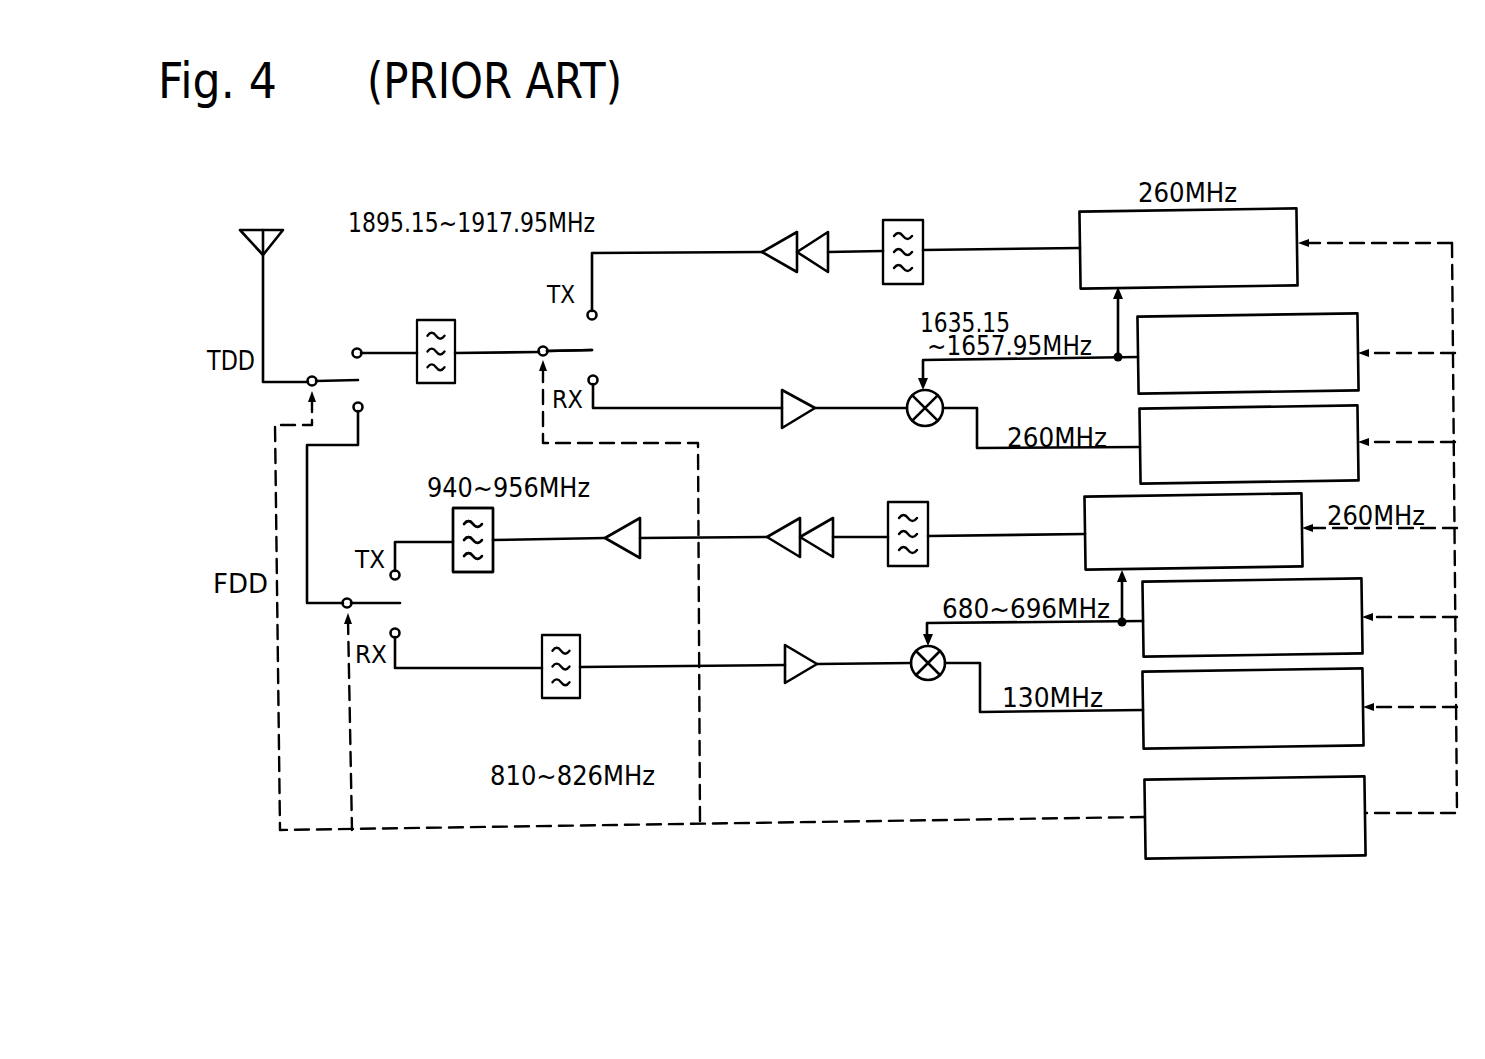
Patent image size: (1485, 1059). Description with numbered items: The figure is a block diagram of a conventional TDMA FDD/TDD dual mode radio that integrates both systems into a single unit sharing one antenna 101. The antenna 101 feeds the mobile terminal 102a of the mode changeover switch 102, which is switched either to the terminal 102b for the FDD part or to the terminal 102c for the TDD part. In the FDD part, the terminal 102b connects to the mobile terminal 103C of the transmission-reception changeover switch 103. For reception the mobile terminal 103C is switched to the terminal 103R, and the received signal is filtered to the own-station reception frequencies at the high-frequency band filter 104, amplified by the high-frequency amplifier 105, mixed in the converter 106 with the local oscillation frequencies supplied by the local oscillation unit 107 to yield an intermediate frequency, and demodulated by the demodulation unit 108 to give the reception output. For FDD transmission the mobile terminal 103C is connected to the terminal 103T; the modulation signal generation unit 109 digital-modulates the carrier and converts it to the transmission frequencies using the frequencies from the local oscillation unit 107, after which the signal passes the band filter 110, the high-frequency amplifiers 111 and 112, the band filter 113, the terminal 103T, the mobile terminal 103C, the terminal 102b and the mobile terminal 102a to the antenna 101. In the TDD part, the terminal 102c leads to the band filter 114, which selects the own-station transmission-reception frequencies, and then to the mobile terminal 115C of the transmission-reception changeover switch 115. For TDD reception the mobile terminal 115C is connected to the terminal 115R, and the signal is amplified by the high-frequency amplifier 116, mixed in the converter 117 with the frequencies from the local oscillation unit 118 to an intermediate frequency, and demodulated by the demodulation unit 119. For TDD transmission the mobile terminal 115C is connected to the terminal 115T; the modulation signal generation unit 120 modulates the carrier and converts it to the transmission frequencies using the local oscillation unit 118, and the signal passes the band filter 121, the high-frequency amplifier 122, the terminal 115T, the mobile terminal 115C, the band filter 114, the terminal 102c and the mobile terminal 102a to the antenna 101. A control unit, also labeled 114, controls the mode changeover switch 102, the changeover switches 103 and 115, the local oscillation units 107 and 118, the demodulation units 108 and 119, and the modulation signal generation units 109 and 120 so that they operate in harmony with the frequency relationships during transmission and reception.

The antenna 101 is at (255, 228).
The mode changeover switch 102 is at (307, 385).
The mobile terminal 102a is at (259, 429).
The terminal 102b is at (370, 412).
The terminal 102c is at (355, 348).
The transmission-reception changeover switch 103 is at (343, 612).
The mobile terminal 103C is at (278, 660).
The terminal 103T is at (400, 578).
The terminal 103R is at (400, 633).
The high-frequency band filter 104 is at (555, 700).
The high-frequency amplifier 105 is at (800, 680).
The converter 106 is at (927, 685).
The local oscillation unit 107 is at (1363, 643).
The demodulation unit 108 is at (1365, 730).
The modulation signal generation unit 109 is at (1303, 550).
The band filter 110 is at (902, 502).
The high-frequency amplifier 111 is at (785, 518).
The high-frequency amplifier 112 is at (625, 525).
The band filter 113 is at (493, 557).
The band filter 114 is at (430, 320).
The transmission-reception changeover switch 115 is at (538, 353).
The mobile terminal 115C is at (508, 396).
The terminal 115T is at (597, 315).
The terminal 115R is at (598, 378).
The high-frequency amplifier 116 is at (788, 392).
The converter 117 is at (908, 395).
The local oscillation unit 118 is at (1358, 318).
The demodulation unit 119 is at (1358, 410).
The modulation signal generation unit 120 is at (1288, 207).
The band filter 121 is at (897, 220).
The high-frequency amplifier 122 is at (781, 236).